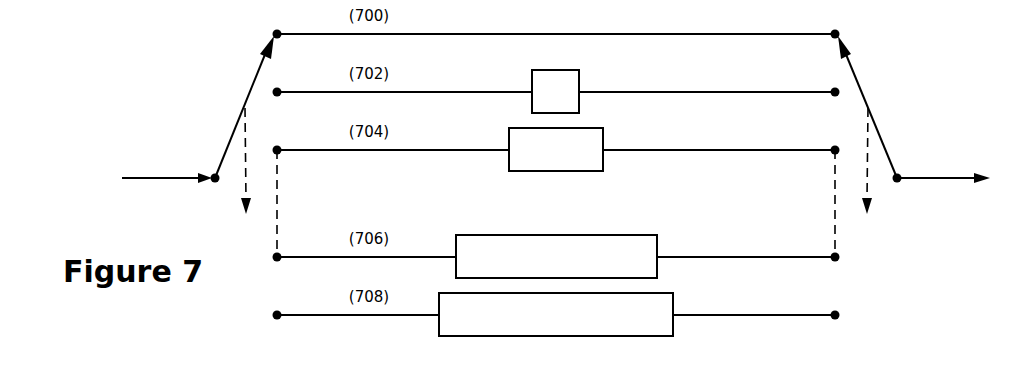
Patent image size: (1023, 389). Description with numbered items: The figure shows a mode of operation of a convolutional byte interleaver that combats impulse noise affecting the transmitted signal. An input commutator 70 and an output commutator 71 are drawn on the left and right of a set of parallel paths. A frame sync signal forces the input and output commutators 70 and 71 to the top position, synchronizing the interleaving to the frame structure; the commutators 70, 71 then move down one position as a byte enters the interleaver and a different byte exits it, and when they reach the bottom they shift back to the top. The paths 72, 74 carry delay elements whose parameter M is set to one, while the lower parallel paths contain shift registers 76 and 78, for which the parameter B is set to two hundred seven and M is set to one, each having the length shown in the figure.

The input commutator 70 is at (255, 82).
The output commutator 71 is at (858, 83).
The path 72 is at (538, 76).
The path 74 is at (518, 132).
The shift register 76 is at (470, 242).
The shift register 78 is at (448, 299).